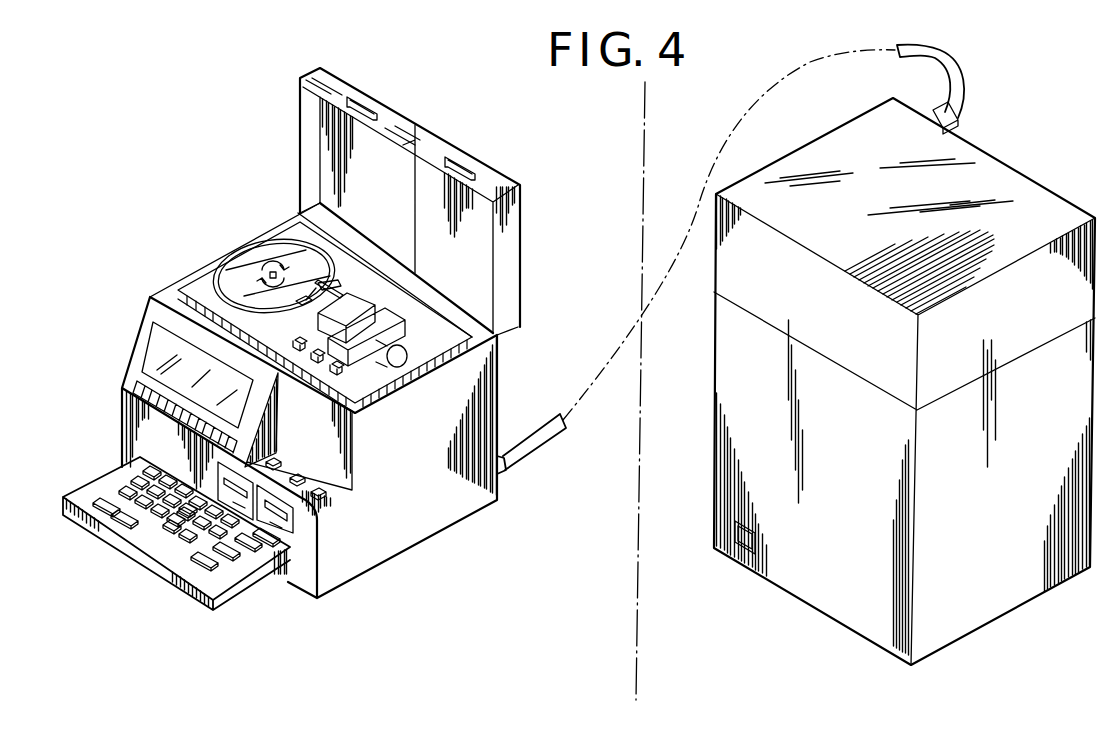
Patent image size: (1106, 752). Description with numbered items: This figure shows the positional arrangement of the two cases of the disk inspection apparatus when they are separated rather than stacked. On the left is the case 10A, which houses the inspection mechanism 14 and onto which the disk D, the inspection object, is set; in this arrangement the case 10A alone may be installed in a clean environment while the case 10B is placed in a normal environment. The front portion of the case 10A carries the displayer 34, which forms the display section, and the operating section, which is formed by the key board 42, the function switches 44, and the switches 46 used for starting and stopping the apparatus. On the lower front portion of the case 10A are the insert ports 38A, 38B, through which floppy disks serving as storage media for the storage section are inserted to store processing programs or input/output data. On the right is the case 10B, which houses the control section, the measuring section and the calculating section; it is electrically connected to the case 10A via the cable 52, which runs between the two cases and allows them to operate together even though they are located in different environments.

The case 10A is at (311, 364).
The case 10B is at (815, 592).
The inspection mechanism 14 is at (436, 354).
The disk D is at (242, 252).
The displayer 34 is at (155, 346).
The function switches 44 is at (143, 387).
The key board 42 is at (103, 487).
The switches 46 is at (322, 473).
The insert port 38A is at (255, 487).
The insert port 38B is at (320, 583).
The cable 52 is at (963, 88).